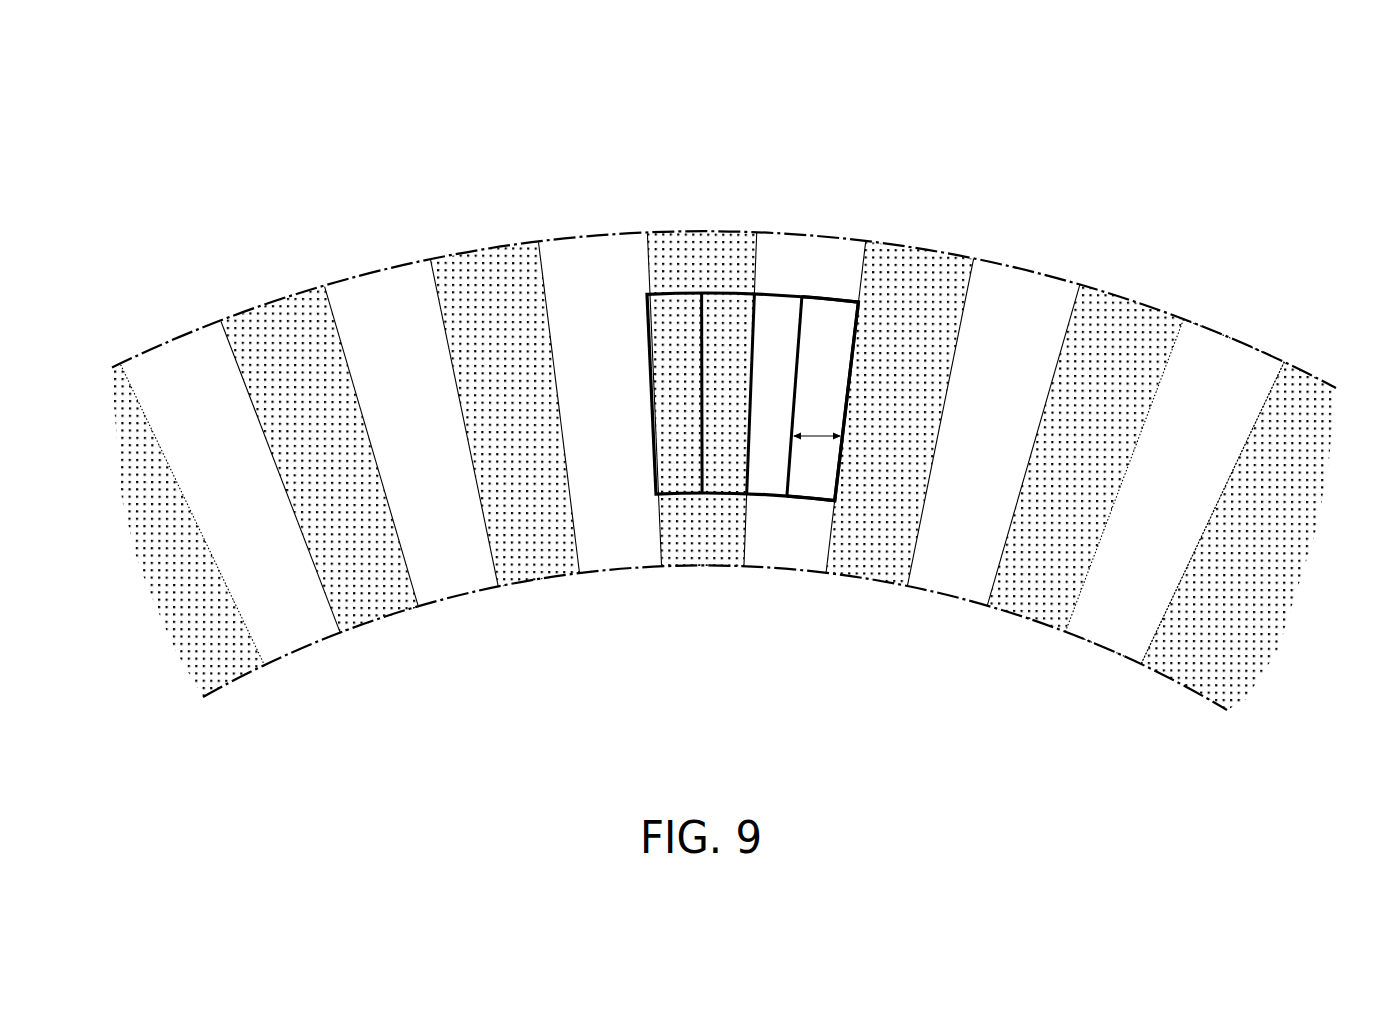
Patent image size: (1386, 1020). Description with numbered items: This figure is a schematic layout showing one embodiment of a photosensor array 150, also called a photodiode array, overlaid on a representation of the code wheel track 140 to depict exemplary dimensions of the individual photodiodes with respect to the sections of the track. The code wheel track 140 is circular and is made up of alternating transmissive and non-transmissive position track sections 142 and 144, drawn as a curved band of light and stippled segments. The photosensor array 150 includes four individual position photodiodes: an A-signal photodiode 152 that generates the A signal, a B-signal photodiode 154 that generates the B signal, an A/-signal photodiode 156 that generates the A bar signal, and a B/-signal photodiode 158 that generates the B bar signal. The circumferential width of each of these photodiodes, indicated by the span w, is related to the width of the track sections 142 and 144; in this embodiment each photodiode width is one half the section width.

The code wheel track 140 is at (1304, 613).
The position track section 142 is at (1223, 374).
The position track section 144 is at (1133, 330).
The photosensor array 150 is at (580, 276).
The A-signal photodiode 152 is at (829, 320).
The B-signal photodiode 154 is at (779, 320).
The A/-signal photodiode 156 is at (734, 323).
The B/-signal photodiode 158 is at (678, 325).